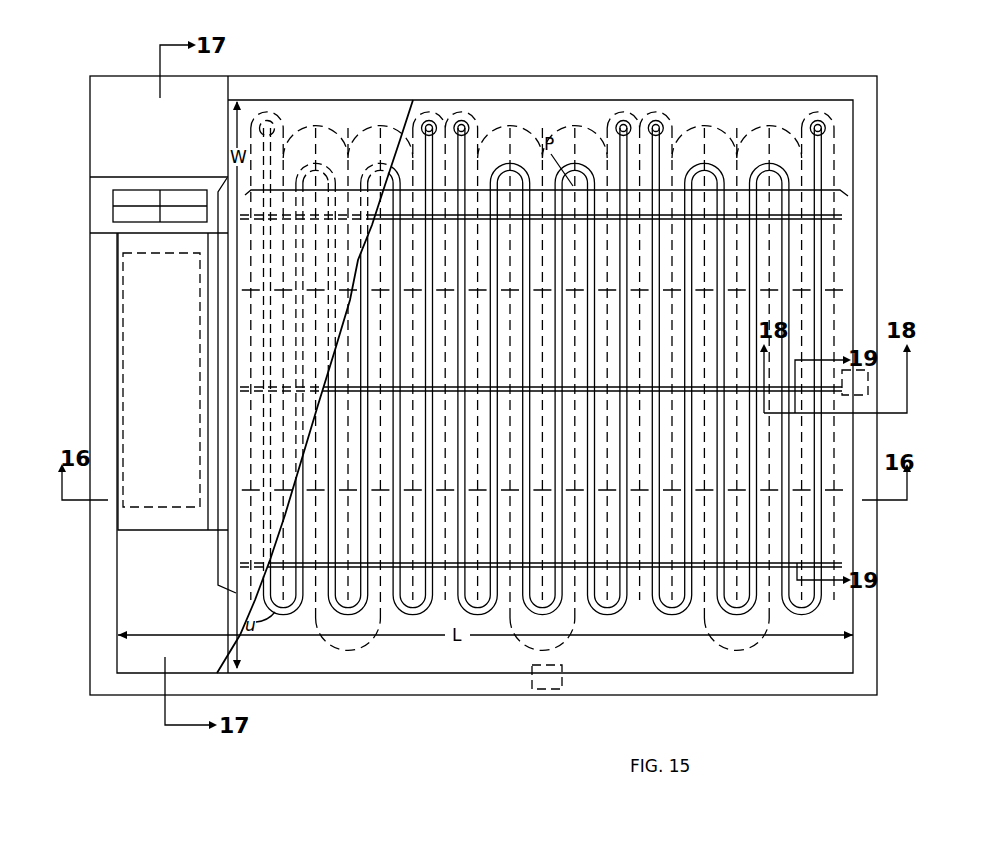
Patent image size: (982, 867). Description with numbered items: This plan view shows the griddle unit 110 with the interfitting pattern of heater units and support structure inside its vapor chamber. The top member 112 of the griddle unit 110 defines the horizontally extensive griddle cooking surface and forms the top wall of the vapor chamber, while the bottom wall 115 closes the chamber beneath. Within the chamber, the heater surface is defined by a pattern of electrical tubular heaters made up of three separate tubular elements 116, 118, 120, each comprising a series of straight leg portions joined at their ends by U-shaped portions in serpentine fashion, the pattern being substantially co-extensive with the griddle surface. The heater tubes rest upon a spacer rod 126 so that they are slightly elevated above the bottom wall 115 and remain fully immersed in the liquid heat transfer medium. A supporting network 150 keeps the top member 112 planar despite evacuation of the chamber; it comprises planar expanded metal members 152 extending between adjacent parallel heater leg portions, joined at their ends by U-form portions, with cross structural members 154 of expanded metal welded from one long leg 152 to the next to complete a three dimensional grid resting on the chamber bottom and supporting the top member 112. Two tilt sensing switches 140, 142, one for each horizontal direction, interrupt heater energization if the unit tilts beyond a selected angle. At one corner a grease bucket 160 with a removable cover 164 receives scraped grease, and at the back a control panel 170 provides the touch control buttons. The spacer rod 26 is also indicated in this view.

The griddle unit 110 is at (360, 716).
The top member 112 is at (376, 133).
The bottom wall 115 is at (592, 133).
The tubular element 116 is at (271, 136).
The tubular element 118 is at (467, 136).
The tubular element 120 is at (660, 138).
The spacer rod 126 is at (735, 213).
The support strip 26 is at (672, 393).
The tilt sensing switch 140 is at (853, 395).
The tilt sensing switch 142 is at (533, 684).
The supporting network 150 is at (441, 118).
The planar expanded metal member 152 is at (284, 605).
The cross structural member 154 is at (450, 490).
The grease bucket 160 is at (132, 392).
The removable cover 164 is at (143, 296).
The control panel 170 is at (97, 190).